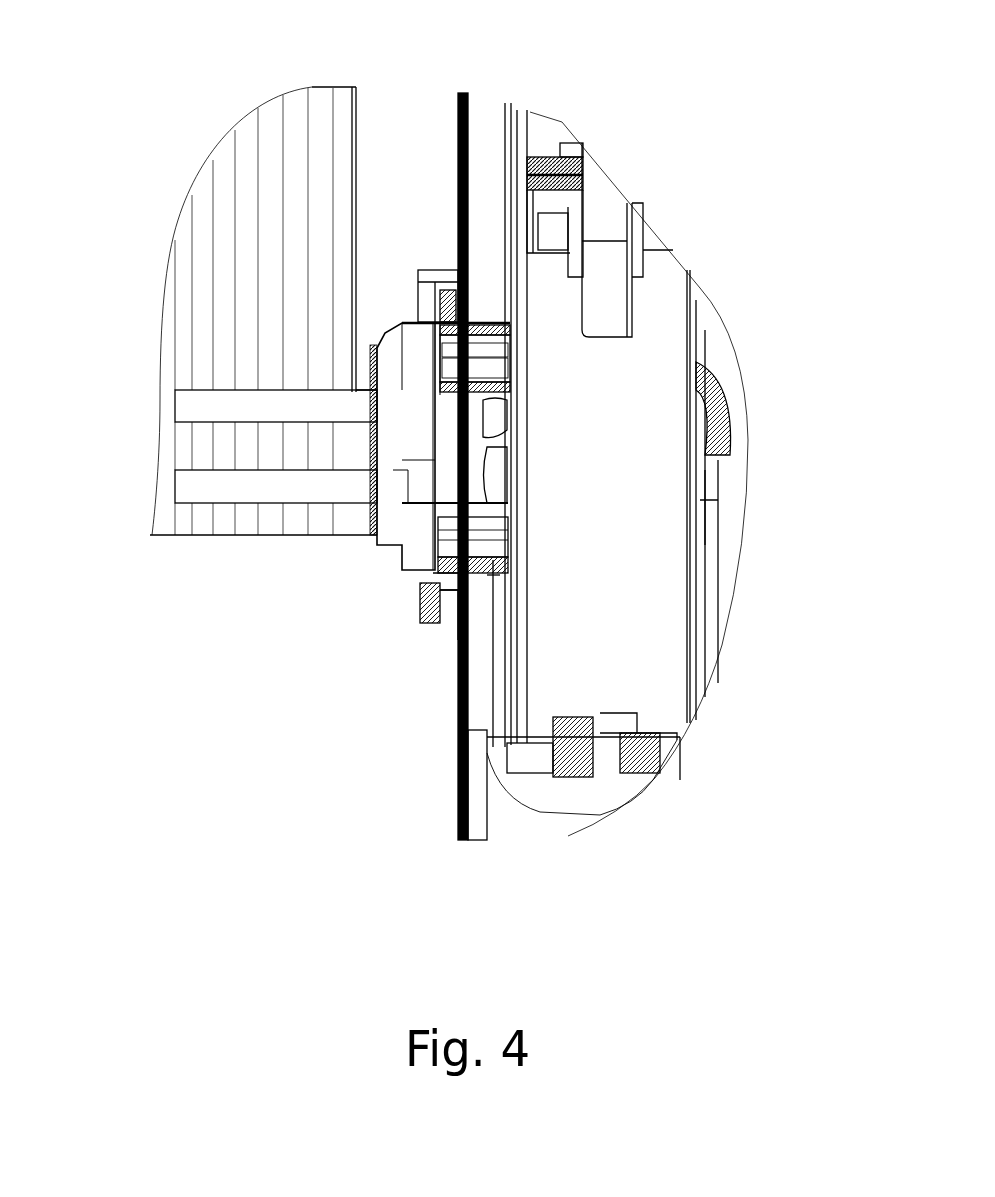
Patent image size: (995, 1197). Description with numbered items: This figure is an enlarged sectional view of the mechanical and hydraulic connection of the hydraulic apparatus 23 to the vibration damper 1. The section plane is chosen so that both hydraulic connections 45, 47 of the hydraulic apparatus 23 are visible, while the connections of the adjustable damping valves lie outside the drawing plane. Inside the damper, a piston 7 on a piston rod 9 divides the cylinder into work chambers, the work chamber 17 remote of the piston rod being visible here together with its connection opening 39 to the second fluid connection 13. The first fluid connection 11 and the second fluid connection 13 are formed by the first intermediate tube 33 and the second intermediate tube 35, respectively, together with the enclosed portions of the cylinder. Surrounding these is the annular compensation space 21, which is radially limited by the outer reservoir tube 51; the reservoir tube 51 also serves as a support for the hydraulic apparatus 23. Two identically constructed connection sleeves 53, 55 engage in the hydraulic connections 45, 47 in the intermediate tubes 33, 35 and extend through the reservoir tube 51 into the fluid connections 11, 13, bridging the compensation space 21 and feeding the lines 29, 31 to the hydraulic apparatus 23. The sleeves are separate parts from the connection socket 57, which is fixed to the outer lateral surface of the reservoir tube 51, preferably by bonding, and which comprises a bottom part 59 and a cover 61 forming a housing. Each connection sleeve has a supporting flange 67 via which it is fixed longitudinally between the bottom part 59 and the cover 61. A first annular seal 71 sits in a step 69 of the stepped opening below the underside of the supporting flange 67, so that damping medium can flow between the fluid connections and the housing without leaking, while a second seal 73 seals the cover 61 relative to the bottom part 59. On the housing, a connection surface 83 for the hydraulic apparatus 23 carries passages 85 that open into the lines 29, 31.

The vibration damper 1 is at (760, 852).
The piston 7 is at (563, 190).
The piston rod 9 is at (607, 310).
The first fluid connection 11 is at (506, 130).
The second fluid connection 13 is at (510, 676).
The work chamber remote of the piston rod 17 is at (650, 597).
The compensation space 21 is at (490, 660).
The hydraulic apparatus 23 is at (173, 550).
The line 29 is at (245, 398).
The line 31 is at (255, 492).
The first intermediate tube 33 is at (503, 165).
The second intermediate tube 35 is at (498, 655).
The connection opening 39 is at (691, 692).
The hydraulic connection 45 is at (503, 317).
The hydraulic connection 47 is at (500, 582).
The reservoir tube 51 is at (492, 685).
The connection sleeve 53 is at (442, 372).
The connection sleeve 55 is at (470, 600).
The connection socket 57 is at (430, 597).
The bottom part 59 is at (440, 280).
The cover 61 is at (392, 591).
The supporting flange 67 is at (438, 594).
The step 69 is at (450, 592).
The first annular seal 71 is at (442, 402).
The second seal 73 is at (428, 430).
The connection surface 83 is at (372, 548).
The passage 85 is at (403, 493).